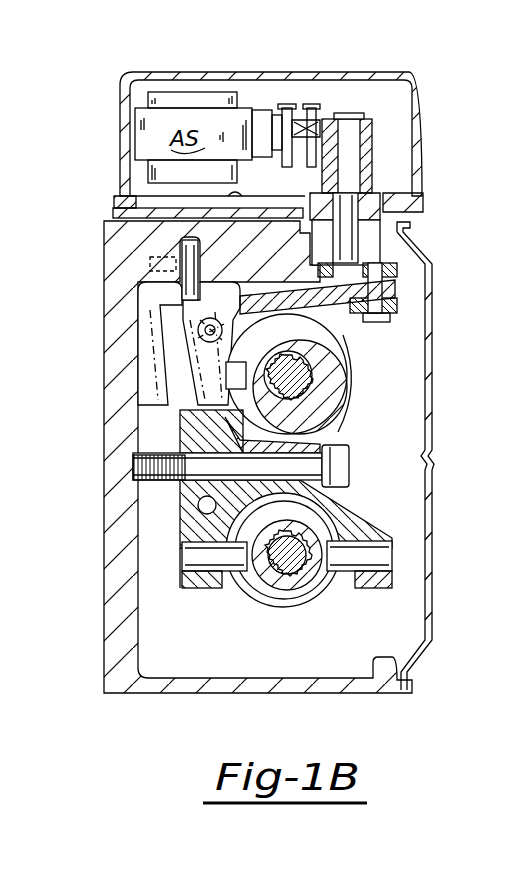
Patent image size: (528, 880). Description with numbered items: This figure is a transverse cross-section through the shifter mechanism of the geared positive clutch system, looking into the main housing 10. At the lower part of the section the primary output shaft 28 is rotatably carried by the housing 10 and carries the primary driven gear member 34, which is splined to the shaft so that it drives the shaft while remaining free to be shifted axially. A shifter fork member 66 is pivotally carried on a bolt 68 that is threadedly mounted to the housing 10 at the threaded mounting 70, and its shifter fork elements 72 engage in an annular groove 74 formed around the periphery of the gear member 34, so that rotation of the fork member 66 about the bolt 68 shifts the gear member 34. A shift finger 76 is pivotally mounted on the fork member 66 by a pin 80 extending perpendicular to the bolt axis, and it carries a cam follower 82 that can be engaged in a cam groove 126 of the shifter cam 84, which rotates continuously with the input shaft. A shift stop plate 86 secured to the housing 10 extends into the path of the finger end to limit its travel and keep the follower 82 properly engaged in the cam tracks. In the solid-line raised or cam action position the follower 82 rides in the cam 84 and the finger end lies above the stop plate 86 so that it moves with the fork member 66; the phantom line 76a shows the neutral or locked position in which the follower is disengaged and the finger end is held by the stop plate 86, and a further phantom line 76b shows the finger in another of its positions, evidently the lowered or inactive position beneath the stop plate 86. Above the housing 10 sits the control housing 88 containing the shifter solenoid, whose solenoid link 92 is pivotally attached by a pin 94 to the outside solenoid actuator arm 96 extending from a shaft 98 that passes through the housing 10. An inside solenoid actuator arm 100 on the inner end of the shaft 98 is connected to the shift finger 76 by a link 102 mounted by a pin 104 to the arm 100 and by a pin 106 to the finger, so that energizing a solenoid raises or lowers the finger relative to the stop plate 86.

The main housing 10 is at (104, 378).
The primary output shaft 28 is at (308, 538).
The primary driven gear member 34 is at (264, 604).
The shifter fork member 66 is at (332, 441).
The bolt 68 is at (350, 470).
The threaded mounting 70 is at (133, 490).
The shifter fork elements 72 is at (194, 588).
The annular groove 74 is at (294, 602).
The shift finger 76 is at (222, 285).
The phantom line position of shift finger 76a is at (140, 301).
The pawl member 76b is at (140, 334).
The pin 80 is at (172, 505).
The cam follower 82 is at (286, 376).
The shifter cam 84 is at (347, 385).
The shift stop plate 86 is at (198, 252).
The control housing 88 is at (208, 72).
The solenoid link 92 is at (307, 114).
The pin 94 is at (333, 92).
The outside solenoid actuator arm 96 is at (374, 143).
The shaft 98 is at (358, 170).
The inside solenoid actuator arm 100 is at (404, 262).
The link 102 is at (398, 292).
The pin 104 is at (392, 314).
The pin 106 is at (240, 298).
The cam groove 126 is at (340, 349).